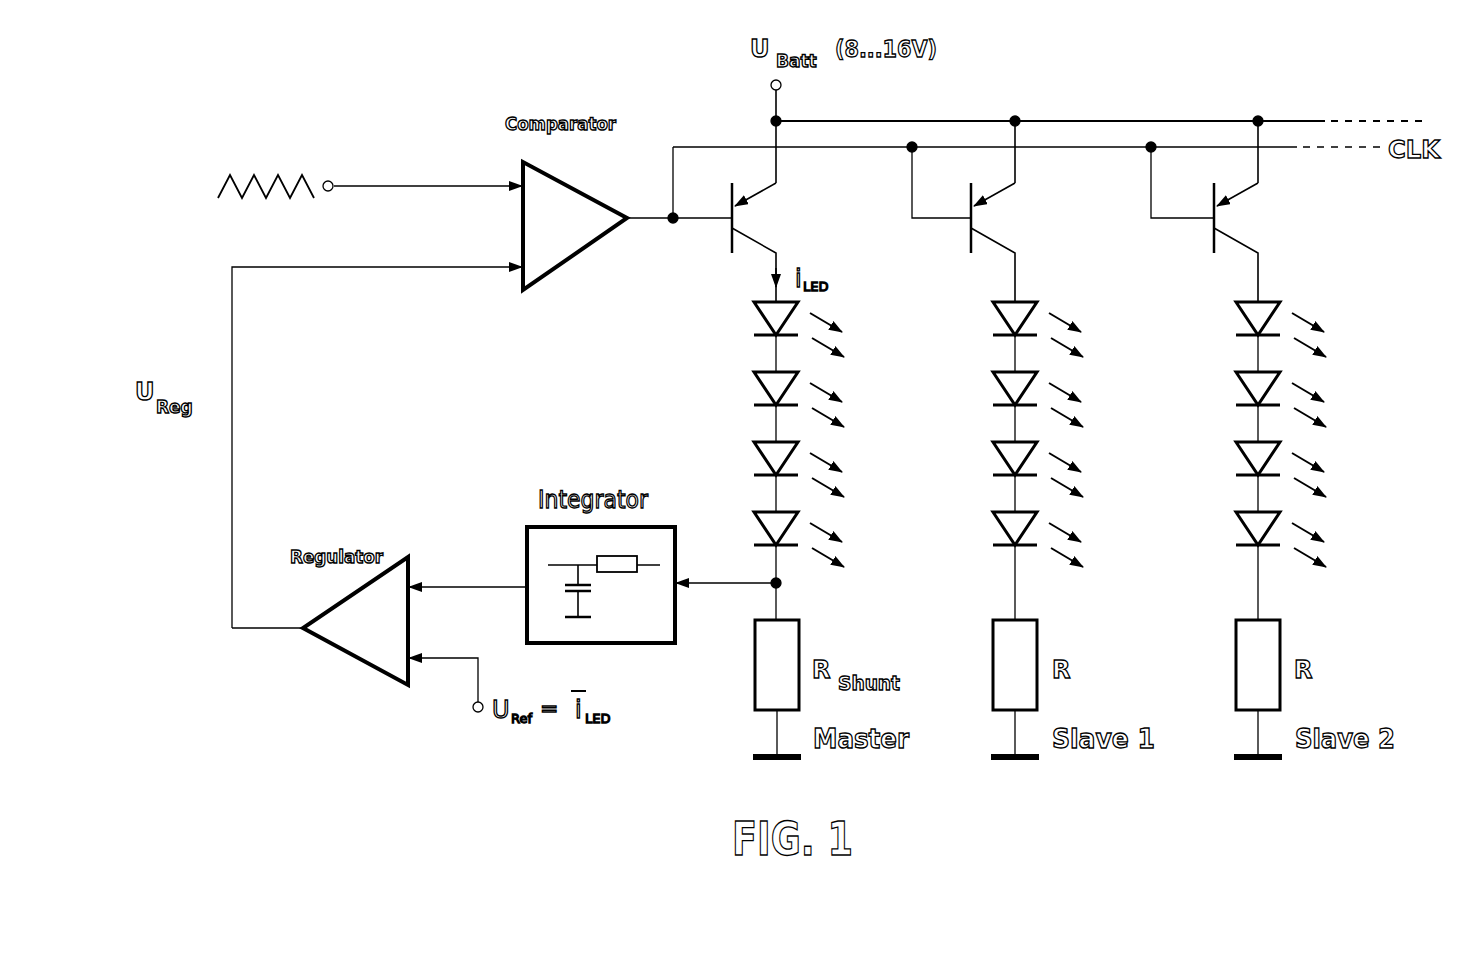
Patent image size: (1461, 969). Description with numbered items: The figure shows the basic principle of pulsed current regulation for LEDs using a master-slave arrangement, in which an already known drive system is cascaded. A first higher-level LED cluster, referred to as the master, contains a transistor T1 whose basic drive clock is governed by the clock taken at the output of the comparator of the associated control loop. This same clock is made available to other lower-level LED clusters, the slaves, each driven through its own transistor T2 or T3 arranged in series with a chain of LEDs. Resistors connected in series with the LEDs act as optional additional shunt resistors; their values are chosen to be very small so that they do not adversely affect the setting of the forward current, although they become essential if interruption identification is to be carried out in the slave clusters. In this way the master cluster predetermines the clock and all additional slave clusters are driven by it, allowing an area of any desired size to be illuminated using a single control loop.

The transistor T1 is at (776, 242).
The slave 1 transistor T2 is at (987, 211).
The slave 2 transistor T3 is at (1228, 211).